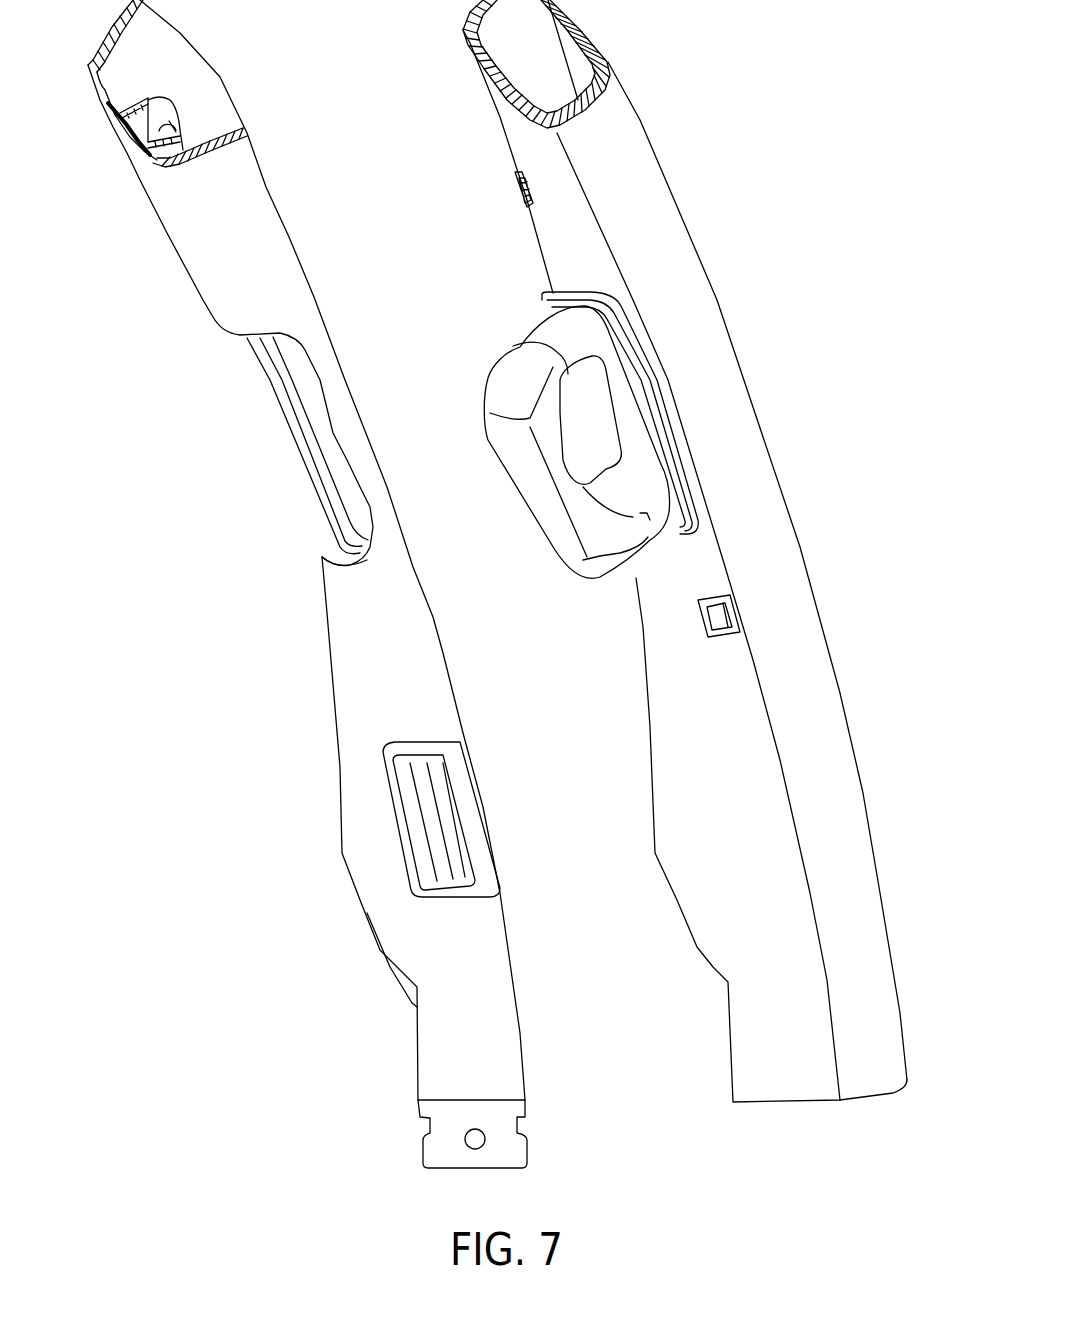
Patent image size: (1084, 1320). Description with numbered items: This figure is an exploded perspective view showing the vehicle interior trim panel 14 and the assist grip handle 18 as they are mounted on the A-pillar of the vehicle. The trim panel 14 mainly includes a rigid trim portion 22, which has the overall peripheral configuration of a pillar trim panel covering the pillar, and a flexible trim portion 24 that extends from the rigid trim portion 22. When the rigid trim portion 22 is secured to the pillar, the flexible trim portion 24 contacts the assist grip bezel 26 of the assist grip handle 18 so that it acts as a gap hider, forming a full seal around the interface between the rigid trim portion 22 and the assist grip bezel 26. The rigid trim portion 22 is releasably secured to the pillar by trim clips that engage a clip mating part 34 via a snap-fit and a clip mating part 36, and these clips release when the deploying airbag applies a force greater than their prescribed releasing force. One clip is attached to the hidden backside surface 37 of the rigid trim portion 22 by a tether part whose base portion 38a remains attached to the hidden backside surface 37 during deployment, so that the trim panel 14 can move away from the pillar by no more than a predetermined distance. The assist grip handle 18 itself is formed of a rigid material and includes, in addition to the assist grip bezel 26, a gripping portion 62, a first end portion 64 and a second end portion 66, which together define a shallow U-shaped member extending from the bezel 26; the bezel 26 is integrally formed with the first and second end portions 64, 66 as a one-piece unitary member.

The vehicle interior trim panel 14 is at (328, 618).
The assist grip handle 18 is at (573, 447).
The rigid trim portion 22 is at (372, 698).
The flexible trim portion 24 is at (300, 435).
The assist grip bezel 26 is at (650, 416).
The clip mating part 34 is at (515, 185).
The clip mating part 36 is at (717, 618).
The hidden backside surface 37 is at (147, 48).
The base portion 38a is at (163, 103).
The gripping portion 62 is at (522, 463).
The first end portion 64 is at (578, 357).
The second end portion 66 is at (653, 510).